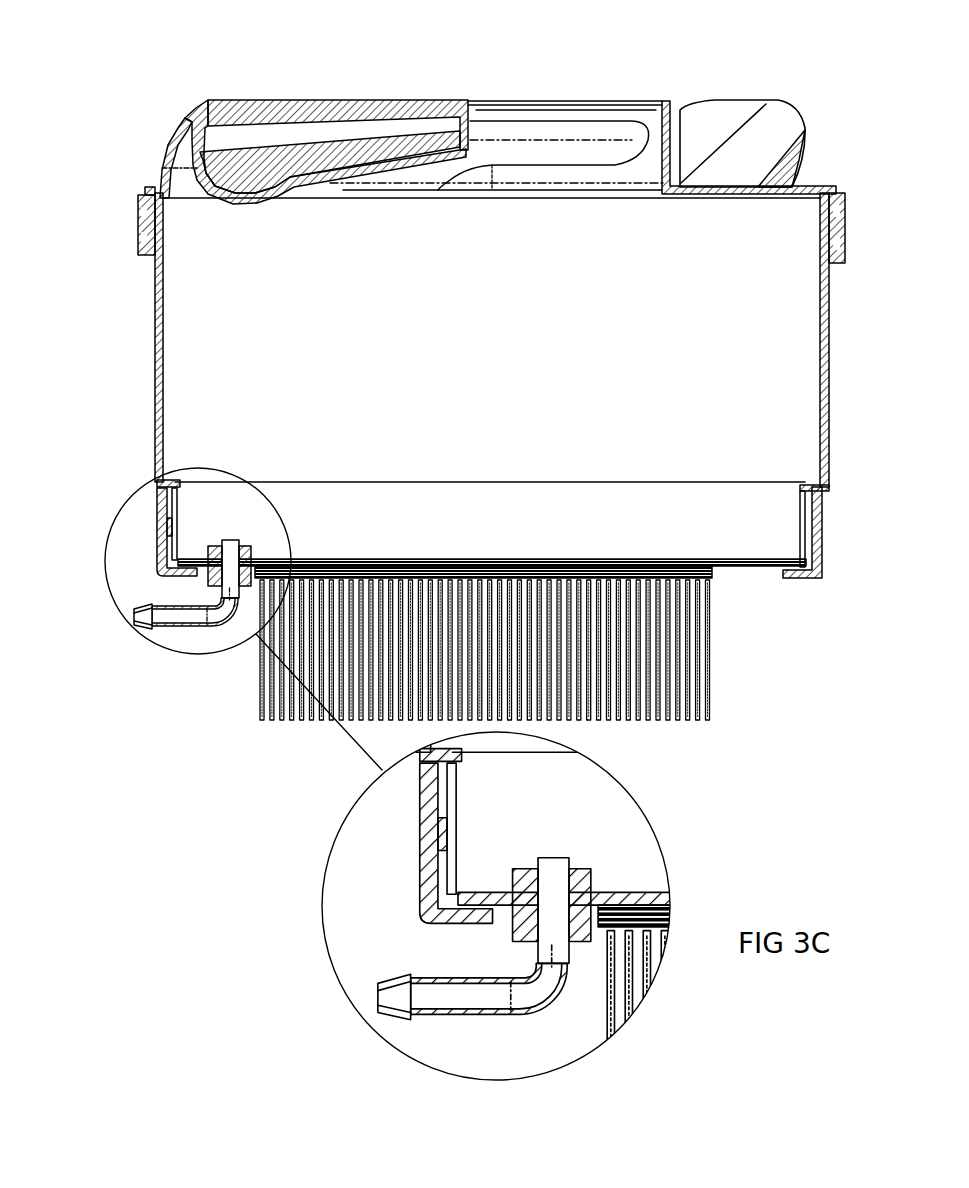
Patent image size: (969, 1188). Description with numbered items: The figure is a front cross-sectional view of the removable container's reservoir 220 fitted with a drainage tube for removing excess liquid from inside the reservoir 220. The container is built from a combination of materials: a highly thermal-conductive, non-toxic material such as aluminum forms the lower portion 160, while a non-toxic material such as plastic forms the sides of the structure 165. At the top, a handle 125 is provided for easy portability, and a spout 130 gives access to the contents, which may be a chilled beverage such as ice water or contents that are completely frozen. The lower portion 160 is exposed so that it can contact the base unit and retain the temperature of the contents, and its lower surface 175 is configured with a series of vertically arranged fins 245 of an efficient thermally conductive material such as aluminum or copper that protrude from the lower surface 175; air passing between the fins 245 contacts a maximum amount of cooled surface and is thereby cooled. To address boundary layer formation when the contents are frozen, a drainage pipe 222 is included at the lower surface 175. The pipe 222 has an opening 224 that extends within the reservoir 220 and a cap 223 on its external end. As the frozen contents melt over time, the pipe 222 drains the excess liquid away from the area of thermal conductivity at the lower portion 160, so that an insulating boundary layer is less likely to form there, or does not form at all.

The handle 125 is at (343, 90).
The spout 130 is at (810, 128).
The reservoir 220 is at (208, 391).
The sides of the structure 165 is at (828, 418).
The opening 224 is at (212, 532).
The lower surface 175 is at (177, 557).
The cap 223 is at (138, 626).
The drainage pipe 222 is at (190, 628).
The lower portion 160 is at (667, 560).
The fins 245 is at (720, 648).